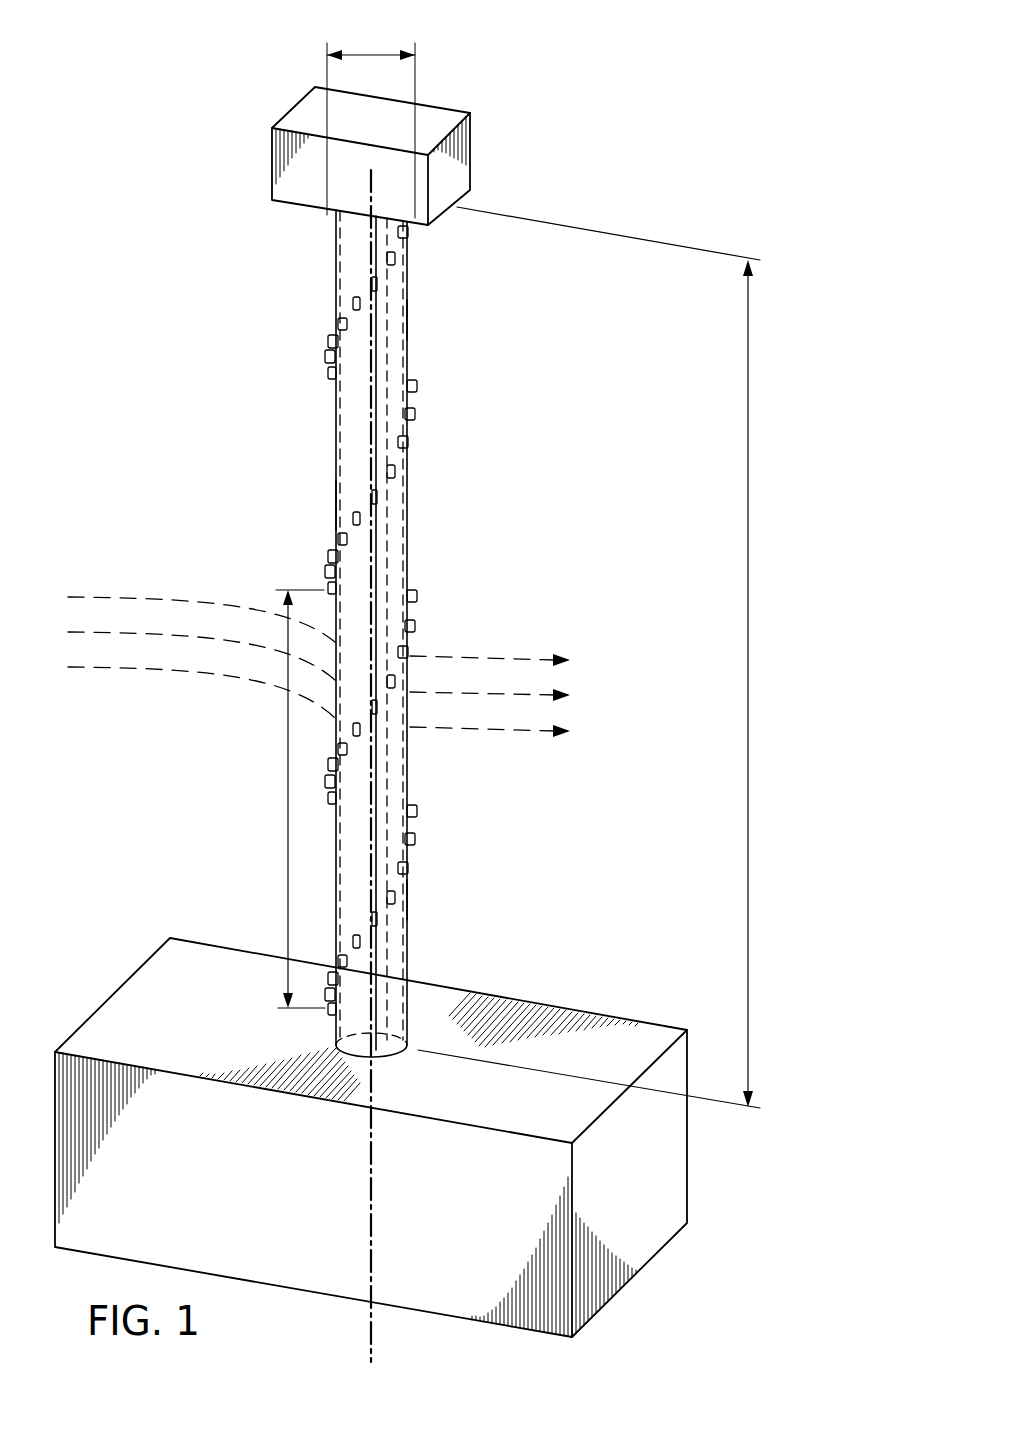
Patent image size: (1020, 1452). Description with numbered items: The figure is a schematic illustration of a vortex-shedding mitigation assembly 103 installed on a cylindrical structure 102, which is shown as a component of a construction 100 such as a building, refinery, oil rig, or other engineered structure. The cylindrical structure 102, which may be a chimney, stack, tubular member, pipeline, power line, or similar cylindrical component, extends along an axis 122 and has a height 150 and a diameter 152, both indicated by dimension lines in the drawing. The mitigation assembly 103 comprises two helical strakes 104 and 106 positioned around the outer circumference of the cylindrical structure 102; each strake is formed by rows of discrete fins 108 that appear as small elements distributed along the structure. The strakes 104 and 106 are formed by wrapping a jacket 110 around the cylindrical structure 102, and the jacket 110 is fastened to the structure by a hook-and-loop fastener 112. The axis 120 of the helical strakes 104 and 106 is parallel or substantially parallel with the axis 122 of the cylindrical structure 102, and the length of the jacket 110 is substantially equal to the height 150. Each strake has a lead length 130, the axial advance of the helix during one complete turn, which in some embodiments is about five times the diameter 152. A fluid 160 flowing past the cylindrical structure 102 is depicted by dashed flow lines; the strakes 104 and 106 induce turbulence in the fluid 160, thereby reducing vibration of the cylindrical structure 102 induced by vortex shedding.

The construction 100 is at (120, 953).
The cylindrical structure 102 is at (338, 450).
The vortex-shedding mitigation assembly 103 is at (537, 330).
The helical strake 104 is at (512, 900).
The helical strake 106 is at (428, 436).
The discrete fins 108 is at (414, 838).
The jacket 110 is at (324, 500).
The hook-and-loop fastener 112 is at (388, 517).
The axis of helical strakes 120 is at (370, 408).
The axis 122 is at (368, 1346).
The lead length 130 is at (288, 800).
The height 150 is at (750, 670).
The diameter 152 is at (372, 53).
The fluid 160 is at (496, 640).